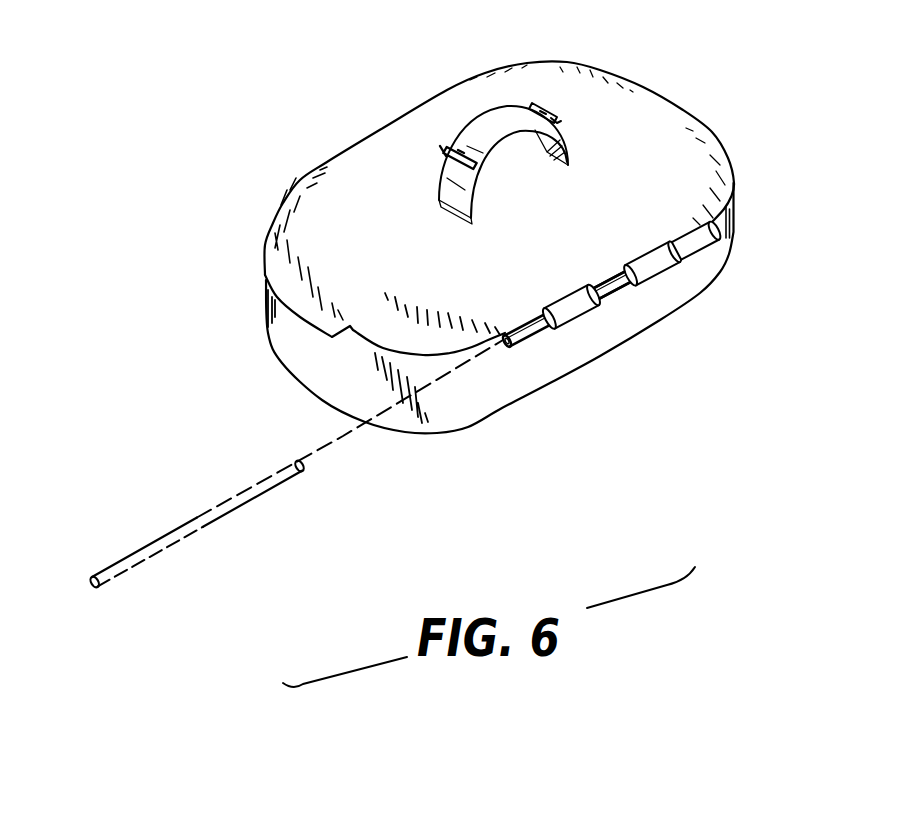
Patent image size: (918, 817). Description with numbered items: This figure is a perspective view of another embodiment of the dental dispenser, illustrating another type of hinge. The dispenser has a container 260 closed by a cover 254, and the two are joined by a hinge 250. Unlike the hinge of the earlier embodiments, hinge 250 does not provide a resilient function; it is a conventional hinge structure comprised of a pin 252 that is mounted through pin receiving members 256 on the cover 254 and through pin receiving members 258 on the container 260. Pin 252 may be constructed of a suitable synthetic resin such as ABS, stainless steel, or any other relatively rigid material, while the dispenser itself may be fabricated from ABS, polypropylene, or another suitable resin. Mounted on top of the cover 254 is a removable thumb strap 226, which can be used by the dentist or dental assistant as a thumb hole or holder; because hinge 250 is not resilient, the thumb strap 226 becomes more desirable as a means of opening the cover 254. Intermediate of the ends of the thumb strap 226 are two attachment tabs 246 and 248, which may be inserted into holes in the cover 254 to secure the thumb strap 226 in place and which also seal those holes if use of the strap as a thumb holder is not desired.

The thumb strap 226 is at (512, 110).
The attachment tab 246 is at (445, 152).
The attachment tab 248 is at (552, 112).
The hinge 250 is at (699, 237).
The pin 252 is at (203, 544).
The cover 254 is at (643, 87).
The pin receiving members 256 is at (627, 267).
The pin receiving members 258 is at (707, 243).
The container 260 is at (737, 232).